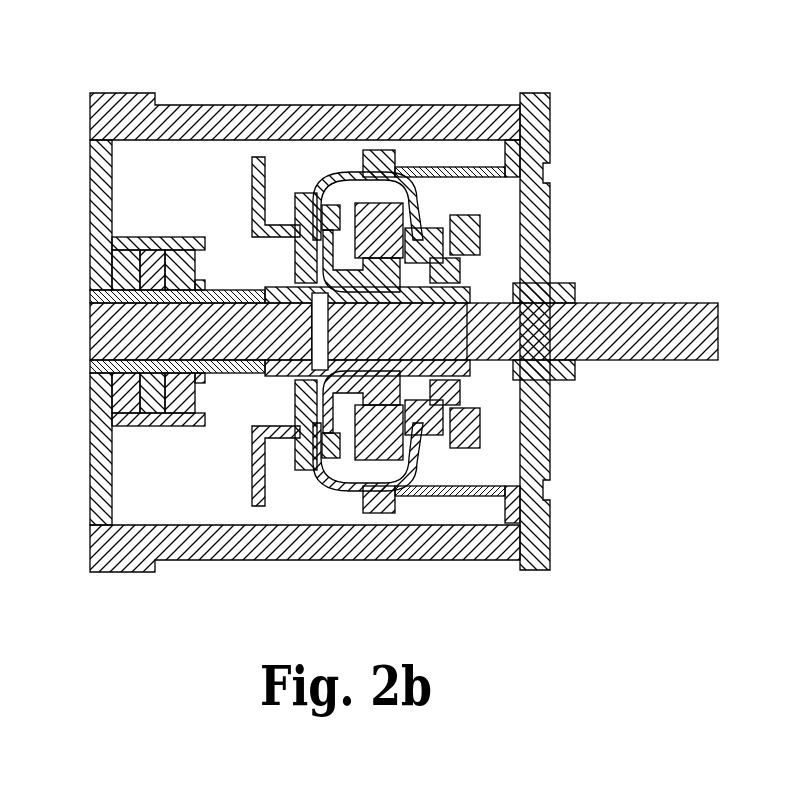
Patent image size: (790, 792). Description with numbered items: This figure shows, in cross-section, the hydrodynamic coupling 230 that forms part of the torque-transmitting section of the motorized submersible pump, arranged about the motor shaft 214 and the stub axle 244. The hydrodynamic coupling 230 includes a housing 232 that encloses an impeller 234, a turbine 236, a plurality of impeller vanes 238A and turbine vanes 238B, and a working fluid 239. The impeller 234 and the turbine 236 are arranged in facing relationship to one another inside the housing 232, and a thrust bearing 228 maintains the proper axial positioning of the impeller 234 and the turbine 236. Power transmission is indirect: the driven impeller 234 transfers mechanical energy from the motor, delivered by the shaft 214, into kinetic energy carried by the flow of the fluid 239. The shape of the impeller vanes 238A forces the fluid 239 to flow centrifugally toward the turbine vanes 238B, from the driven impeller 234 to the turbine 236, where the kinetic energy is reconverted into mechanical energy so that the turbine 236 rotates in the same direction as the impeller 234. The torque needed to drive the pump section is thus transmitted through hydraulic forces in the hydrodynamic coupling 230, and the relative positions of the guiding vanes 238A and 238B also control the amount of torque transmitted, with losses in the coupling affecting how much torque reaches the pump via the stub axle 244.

The shaft 214 is at (633, 318).
The thrust bearing 228 is at (158, 237).
The hydrodynamic coupling 230 is at (477, 87).
The housing 232 is at (423, 497).
The impeller 234 is at (423, 440).
The turbine 236 is at (348, 455).
The impeller vanes 238A is at (380, 425).
The turbine vanes 238B is at (330, 398).
The fluid 239 is at (390, 388).
The stub axle 244 is at (110, 327).